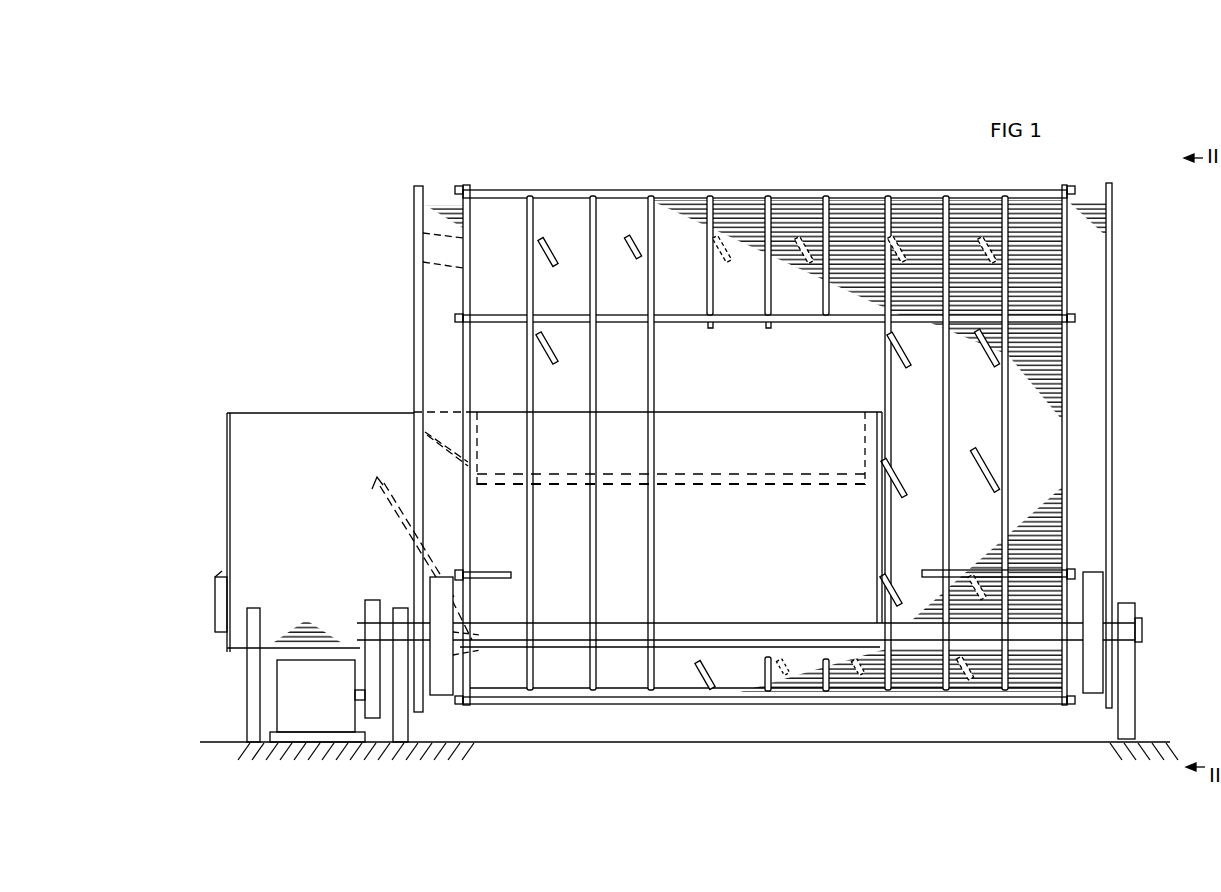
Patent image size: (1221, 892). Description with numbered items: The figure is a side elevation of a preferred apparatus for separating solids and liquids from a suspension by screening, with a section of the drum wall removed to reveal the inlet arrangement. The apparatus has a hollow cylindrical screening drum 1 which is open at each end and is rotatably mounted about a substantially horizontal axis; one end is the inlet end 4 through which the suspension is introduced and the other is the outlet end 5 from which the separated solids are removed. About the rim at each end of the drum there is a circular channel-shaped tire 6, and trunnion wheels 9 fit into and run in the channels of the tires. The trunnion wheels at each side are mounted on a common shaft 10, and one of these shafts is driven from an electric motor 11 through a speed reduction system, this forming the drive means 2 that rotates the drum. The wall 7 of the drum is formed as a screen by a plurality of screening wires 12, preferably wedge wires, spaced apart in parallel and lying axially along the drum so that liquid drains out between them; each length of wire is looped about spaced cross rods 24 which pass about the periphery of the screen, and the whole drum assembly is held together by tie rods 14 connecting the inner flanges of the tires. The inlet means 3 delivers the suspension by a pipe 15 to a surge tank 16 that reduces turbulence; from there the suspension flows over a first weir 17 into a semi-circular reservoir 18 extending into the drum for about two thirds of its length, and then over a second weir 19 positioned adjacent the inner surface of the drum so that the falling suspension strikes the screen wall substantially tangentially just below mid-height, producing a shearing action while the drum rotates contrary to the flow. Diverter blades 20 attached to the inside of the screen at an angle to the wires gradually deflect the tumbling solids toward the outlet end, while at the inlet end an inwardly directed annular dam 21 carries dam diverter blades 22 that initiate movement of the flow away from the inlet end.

The screening drum 1 is at (739, 158).
The drive means 2 is at (346, 625).
The inlet means 3 is at (321, 384).
The inlet end 4 is at (400, 301).
The outlet end 5 is at (1128, 485).
The tire 6 is at (445, 207).
The wall 7 is at (853, 215).
The trunnion wheel 9 is at (447, 700).
The shaft 10 is at (702, 622).
The electric motor 11 is at (277, 698).
The screening wires 12 is at (927, 213).
The tie rods 14 is at (634, 196).
The pipe 15 is at (216, 578).
The surge tank 16 is at (258, 508).
The first weir 17 is at (376, 477).
The reservoir 18 is at (677, 412).
The second weir 19 is at (745, 474).
The diverter blades 20 is at (551, 266).
The dam 21 is at (422, 224).
The dam diverter blades 22 is at (436, 254).
The cross rods 24 is at (590, 208).